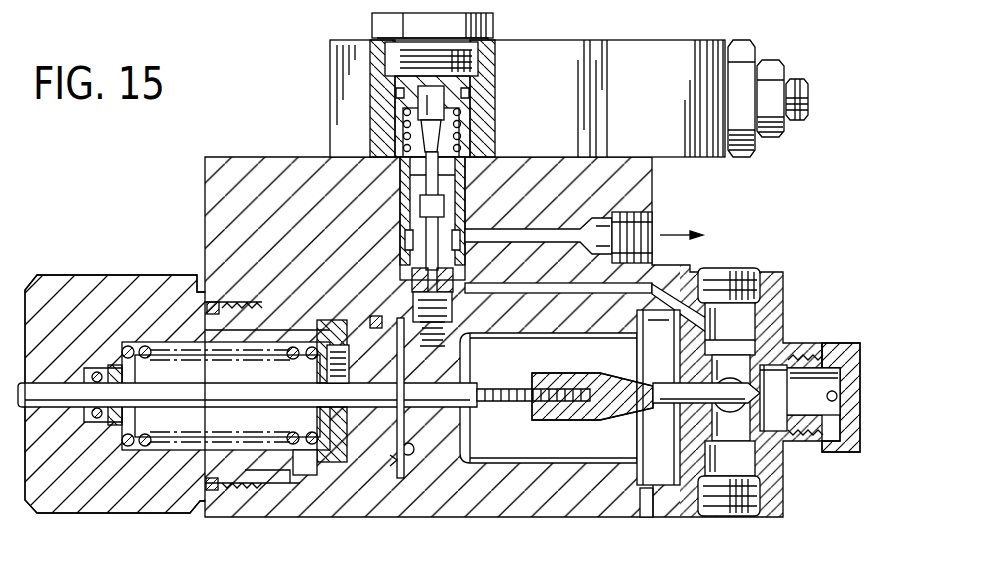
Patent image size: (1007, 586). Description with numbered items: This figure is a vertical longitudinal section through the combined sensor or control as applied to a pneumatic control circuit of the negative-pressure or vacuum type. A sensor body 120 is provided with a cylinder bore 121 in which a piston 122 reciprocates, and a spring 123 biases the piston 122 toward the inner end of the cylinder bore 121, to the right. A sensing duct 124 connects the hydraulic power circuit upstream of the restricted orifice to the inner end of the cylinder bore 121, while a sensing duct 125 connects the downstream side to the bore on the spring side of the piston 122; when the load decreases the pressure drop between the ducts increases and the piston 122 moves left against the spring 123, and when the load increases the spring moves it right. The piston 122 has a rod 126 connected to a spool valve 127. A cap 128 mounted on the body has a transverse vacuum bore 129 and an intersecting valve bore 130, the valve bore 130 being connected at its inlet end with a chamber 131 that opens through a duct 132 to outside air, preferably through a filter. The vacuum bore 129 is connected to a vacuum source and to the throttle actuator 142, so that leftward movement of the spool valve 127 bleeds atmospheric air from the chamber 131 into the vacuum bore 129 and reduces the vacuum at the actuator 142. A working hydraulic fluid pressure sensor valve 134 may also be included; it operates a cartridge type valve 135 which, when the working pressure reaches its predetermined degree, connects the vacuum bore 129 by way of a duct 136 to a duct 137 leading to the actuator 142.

The sensor body 120 is at (508, 517).
The cylinder bore 121 is at (312, 480).
The piston 122 is at (396, 465).
The spring 123 is at (148, 440).
The sensing duct 124 is at (410, 456).
The sensing duct 125 is at (293, 332).
The rod 126 is at (457, 390).
The spool valve 127 is at (623, 407).
The cap 128 is at (660, 505).
The vacuum bore 129 is at (738, 335).
The valve bore 130 is at (760, 418).
The chamber 131 is at (826, 415).
The duct 132 is at (832, 348).
The working hydraulic fluid pressure sensor valve 134 is at (565, 38).
The cartridge type valve 135 is at (403, 220).
The duct 136 is at (665, 300).
The duct 137 is at (522, 233).
The actuator 142 is at (675, 233).